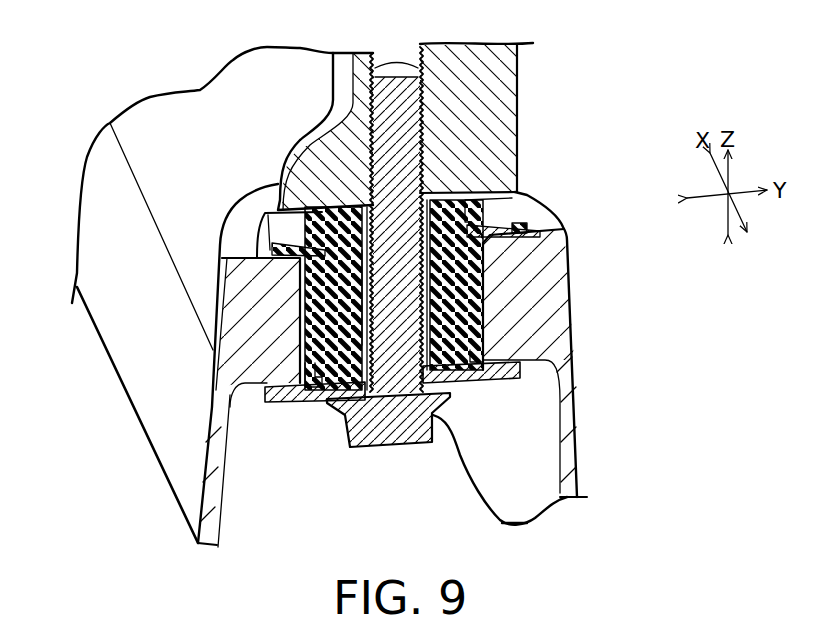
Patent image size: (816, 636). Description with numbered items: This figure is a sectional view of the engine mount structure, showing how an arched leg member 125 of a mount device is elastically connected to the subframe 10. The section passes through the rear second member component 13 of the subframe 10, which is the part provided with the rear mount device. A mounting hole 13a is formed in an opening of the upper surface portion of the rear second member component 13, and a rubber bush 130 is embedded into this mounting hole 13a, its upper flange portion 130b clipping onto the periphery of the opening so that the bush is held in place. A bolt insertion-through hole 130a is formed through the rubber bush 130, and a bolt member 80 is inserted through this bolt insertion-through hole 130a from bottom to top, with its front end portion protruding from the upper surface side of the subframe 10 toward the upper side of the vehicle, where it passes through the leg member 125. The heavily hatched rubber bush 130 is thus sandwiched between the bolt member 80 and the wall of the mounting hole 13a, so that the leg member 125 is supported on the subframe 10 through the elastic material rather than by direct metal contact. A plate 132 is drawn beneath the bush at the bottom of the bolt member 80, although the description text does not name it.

The subframe 10 is at (593, 364).
The rear second member component 13 is at (578, 273).
The mounting hole 13a is at (490, 304).
The bolt member 80 is at (397, 85).
The leg member 125 is at (507, 102).
The rubber bush 130 is at (497, 215).
The bolt insertion-through hole 130a is at (360, 283).
The upper flange portion 130b is at (512, 224).
The plate 132 is at (506, 378).